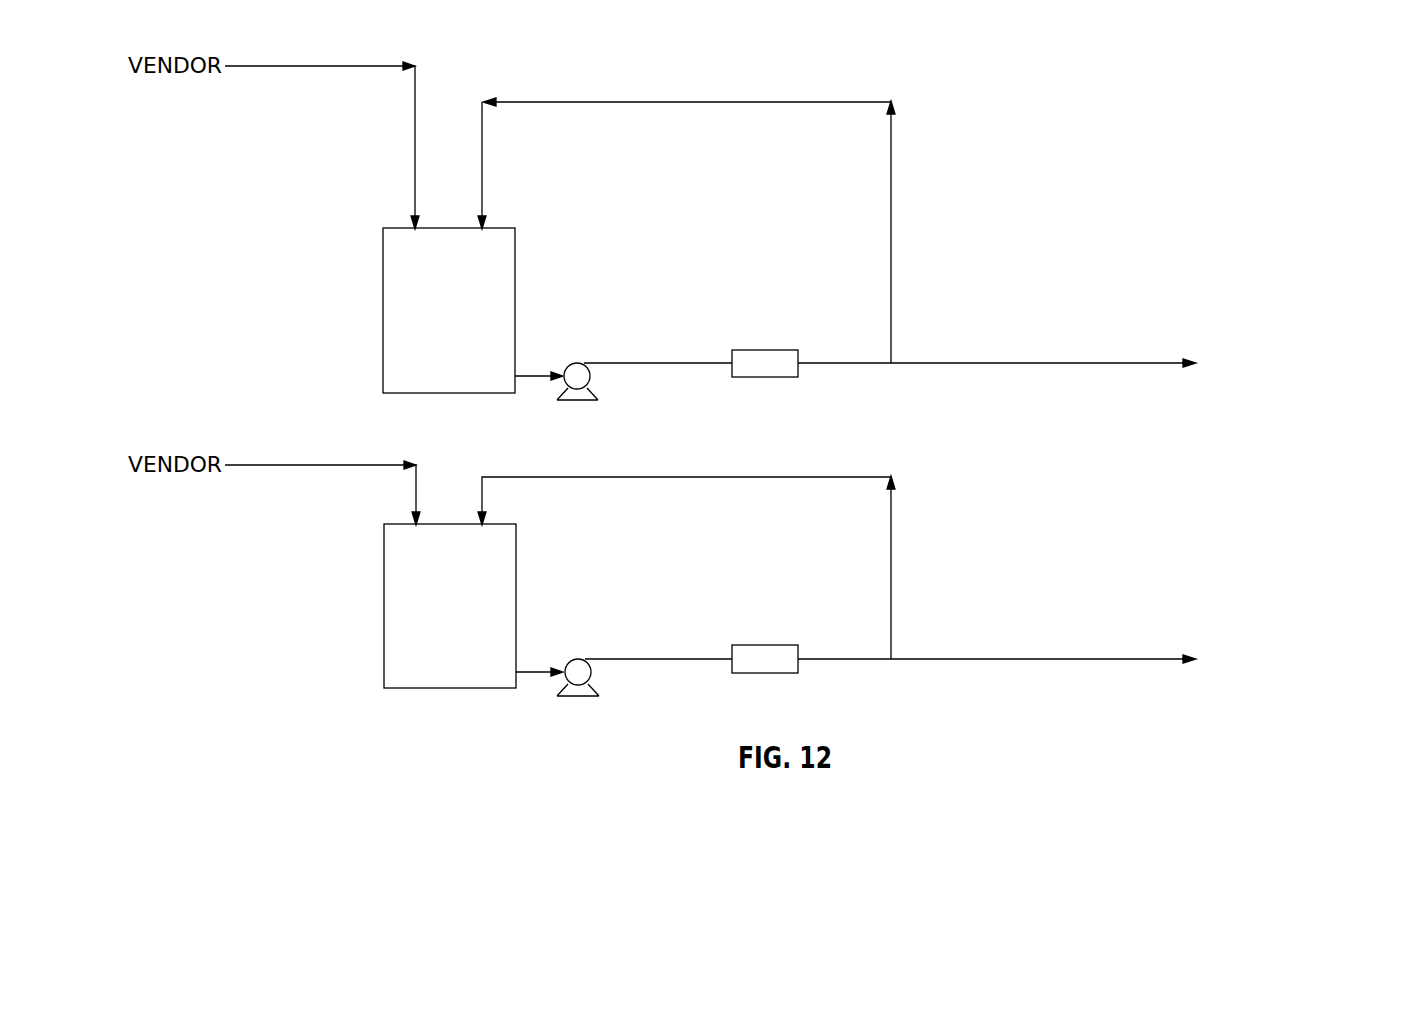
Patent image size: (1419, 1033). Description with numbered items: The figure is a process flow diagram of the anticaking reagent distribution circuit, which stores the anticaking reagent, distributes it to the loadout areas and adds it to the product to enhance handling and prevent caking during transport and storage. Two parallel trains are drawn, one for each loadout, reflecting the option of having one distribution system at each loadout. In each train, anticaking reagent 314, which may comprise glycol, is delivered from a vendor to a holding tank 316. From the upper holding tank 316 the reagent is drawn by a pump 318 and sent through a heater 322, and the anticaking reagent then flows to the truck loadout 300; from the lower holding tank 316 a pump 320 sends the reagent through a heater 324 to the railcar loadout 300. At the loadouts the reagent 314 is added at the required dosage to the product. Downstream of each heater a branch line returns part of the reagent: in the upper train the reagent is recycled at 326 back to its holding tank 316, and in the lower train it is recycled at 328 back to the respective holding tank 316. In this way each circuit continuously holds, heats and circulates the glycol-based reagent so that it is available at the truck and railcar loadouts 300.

The loadout 300 is at (1350, 376).
The anticaking reagent 314 is at (352, 63).
The holding tank 316 is at (470, 323).
The pump 318 is at (580, 363).
The pump 320 is at (581, 659).
The heater 322 is at (765, 362).
The heater 324 is at (766, 658).
The recycle line 326 is at (764, 100).
The recycle line 328 is at (810, 475).